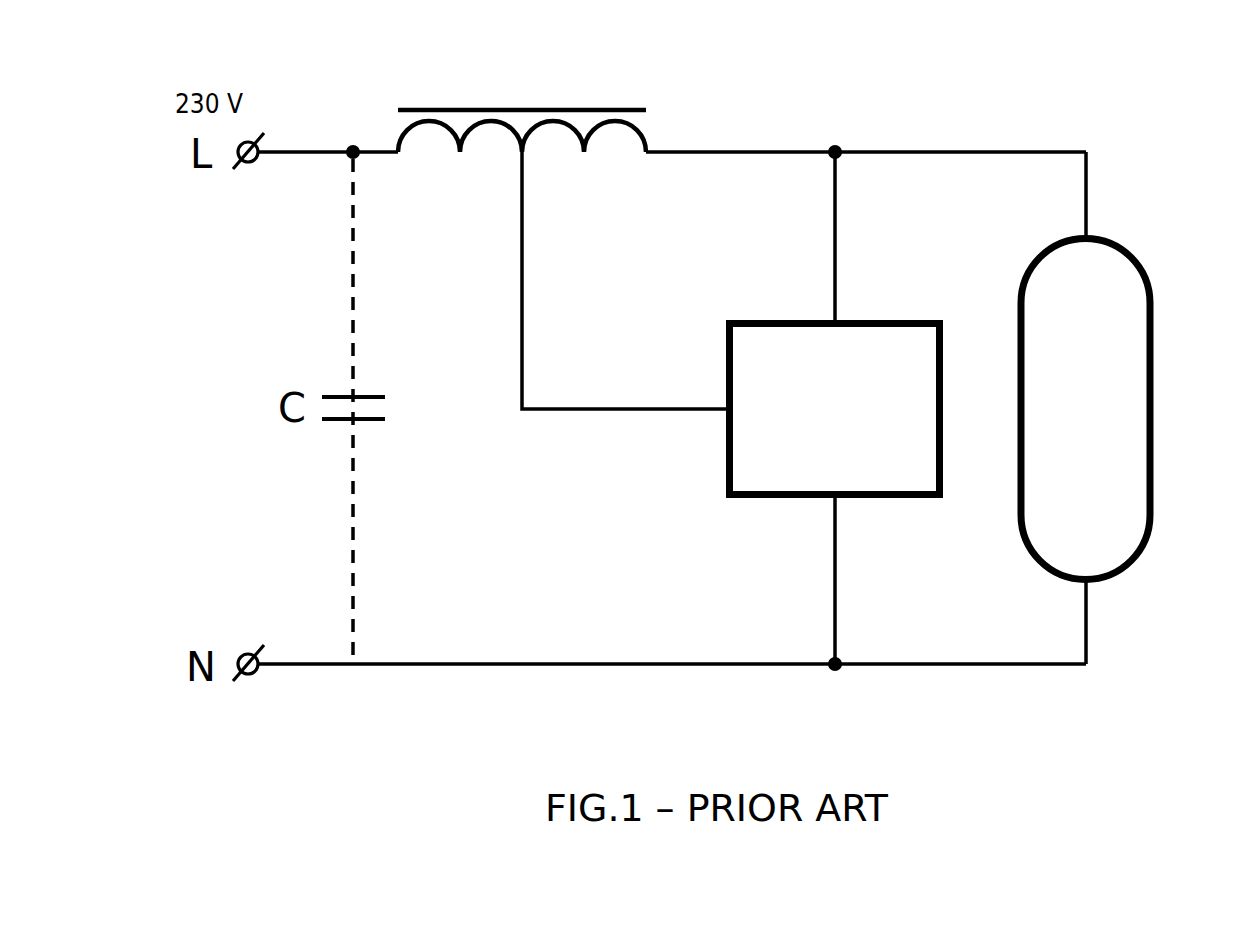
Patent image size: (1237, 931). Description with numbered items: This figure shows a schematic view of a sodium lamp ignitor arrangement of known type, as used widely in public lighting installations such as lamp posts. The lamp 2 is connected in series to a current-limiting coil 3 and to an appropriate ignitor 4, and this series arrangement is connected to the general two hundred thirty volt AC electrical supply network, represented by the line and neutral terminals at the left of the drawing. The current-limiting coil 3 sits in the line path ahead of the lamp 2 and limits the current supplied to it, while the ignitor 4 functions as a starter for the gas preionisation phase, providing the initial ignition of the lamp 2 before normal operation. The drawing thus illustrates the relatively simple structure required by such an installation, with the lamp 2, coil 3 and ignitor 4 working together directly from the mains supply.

The lamp 2 is at (1157, 273).
The current-limiting coil 3 is at (621, 100).
The ignitor 4 is at (782, 418).